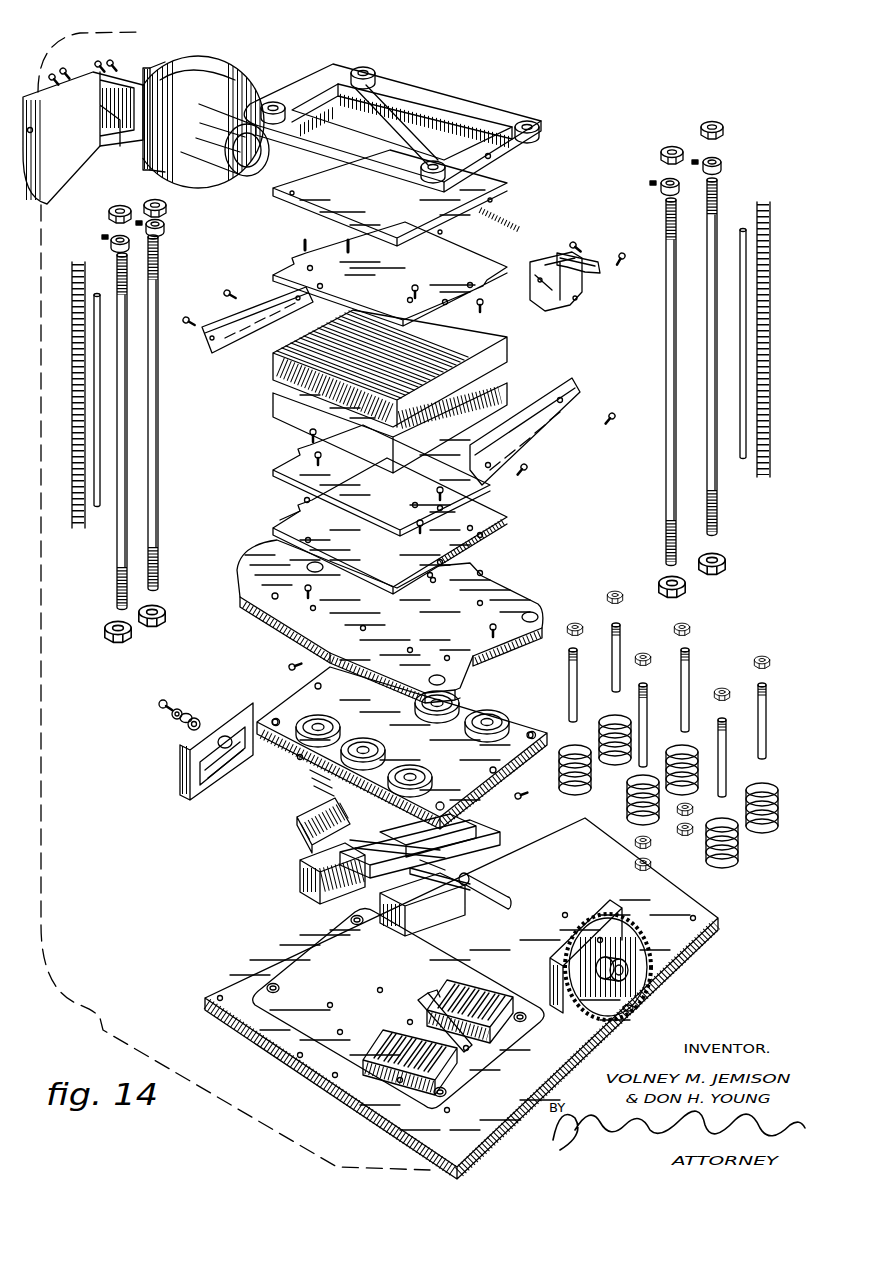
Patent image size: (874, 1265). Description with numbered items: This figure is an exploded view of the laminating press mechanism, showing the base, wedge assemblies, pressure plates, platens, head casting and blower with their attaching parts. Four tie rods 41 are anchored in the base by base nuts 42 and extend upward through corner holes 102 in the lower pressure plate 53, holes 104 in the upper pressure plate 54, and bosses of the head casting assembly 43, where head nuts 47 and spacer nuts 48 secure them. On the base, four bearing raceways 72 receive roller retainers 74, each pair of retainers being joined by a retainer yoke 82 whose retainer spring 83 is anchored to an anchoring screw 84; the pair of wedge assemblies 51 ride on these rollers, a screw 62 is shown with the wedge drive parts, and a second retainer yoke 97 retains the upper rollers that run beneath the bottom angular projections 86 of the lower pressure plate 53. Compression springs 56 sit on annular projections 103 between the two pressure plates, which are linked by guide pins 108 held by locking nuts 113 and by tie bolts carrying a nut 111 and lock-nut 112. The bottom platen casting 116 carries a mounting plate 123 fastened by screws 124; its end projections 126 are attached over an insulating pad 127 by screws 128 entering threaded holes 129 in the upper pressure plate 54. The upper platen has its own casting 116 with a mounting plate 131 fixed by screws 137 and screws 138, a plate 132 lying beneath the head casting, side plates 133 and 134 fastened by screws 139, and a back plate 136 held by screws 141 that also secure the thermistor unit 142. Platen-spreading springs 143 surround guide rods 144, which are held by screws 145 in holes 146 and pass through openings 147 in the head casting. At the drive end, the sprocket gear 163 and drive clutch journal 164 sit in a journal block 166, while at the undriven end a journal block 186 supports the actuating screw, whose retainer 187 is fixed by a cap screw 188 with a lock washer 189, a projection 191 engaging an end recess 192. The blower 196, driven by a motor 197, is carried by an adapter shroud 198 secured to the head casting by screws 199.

The tie rods 41 is at (128, 480).
The base nuts 42 is at (140, 628).
The head casting assembly 43 is at (455, 96).
The head nuts 47 is at (148, 204).
The spacer nuts 48 is at (162, 230).
The wedge assemblies 51 is at (302, 858).
The lower pressure plate 53 is at (487, 699).
The upper pressure plate 54 is at (518, 590).
The compression springs 56 is at (740, 850).
The screw 62 is at (512, 902).
The bearing raceways 72 is at (370, 1052).
The roller retainers 74 is at (471, 983).
The retainer yoke 82 is at (418, 1008).
The retainer spring 83 is at (432, 998).
The anchoring screw 84 is at (470, 1050).
The bottom angular projections 86 is at (318, 782).
The retainer yoke 97 is at (468, 880).
The corner holes 102 is at (532, 731).
The annular projections 103 is at (432, 779).
The holes 104 is at (272, 596).
The guide pins 108 is at (614, 672).
The nut 111 is at (682, 815).
The lock-nut 112 is at (687, 838).
The locking nuts 113 is at (724, 686).
The platen casting 116 is at (511, 356).
The mounting plate 123 is at (526, 475).
The screws 124 is at (425, 530).
The end projections 126 is at (308, 452).
The insulating pad 127 is at (510, 540).
The screws 128 is at (436, 490).
The threaded holes 129 is at (313, 590).
The mounting plate 131 is at (495, 262).
The top plate 132 is at (292, 200).
The side plate 133 is at (228, 355).
The side plate 134 is at (535, 446).
The back plate 136 is at (585, 297).
The screws 137 is at (409, 289).
The screws 138 is at (488, 306).
The screws 139 is at (188, 318).
The screws 141 is at (620, 252).
The thermistor unit 142 is at (598, 273).
The platen-spreading springs 143 is at (78, 265).
The guide rods 144 is at (97, 512).
The screws 145 is at (286, 668).
The holes 146 is at (313, 686).
The openings 147 is at (500, 162).
The sprocket gear 163 is at (633, 1012).
The drive clutch journal 164 is at (588, 915).
The journal block 166 is at (553, 955).
The journal block 186 is at (212, 790).
The retainer 187 is at (190, 712).
The cap screw 188 is at (158, 700).
The lock washer 189 is at (172, 716).
The projection 191 is at (197, 719).
The end recess 192 is at (317, 797).
The blower 196 is at (180, 55).
The motor 197 is at (246, 177).
The adapter shroud 198 is at (68, 150).
The screws 199 is at (70, 68).